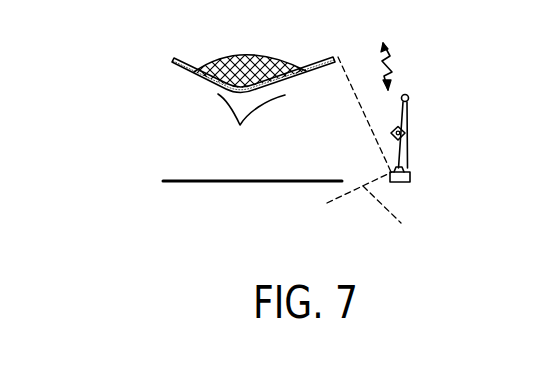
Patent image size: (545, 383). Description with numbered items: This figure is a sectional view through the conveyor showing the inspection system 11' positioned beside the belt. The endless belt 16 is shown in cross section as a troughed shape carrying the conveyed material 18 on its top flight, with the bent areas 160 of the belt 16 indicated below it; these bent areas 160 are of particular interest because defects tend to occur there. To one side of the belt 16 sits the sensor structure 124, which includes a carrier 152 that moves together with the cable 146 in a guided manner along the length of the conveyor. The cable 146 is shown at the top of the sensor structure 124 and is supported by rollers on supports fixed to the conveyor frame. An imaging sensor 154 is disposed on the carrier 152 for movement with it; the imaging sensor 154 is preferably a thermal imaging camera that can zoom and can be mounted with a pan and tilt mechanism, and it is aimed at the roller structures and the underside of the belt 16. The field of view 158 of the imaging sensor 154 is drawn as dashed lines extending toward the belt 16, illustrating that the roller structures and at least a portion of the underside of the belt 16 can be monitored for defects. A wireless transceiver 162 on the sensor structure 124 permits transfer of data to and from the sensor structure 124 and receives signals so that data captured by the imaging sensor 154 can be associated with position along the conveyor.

The endless belt 16 is at (317, 65).
The material 18 is at (252, 65).
The bent areas 160 is at (251, 126).
The wireless transceiver 162 is at (403, 111).
The cable 146 is at (408, 137).
The sensor structure 124 is at (417, 150).
The imaging sensor 154 is at (405, 172).
The carrier 152 is at (410, 173).
The field of view 158 is at (397, 212).
The inspection system 11' is at (353, 117).